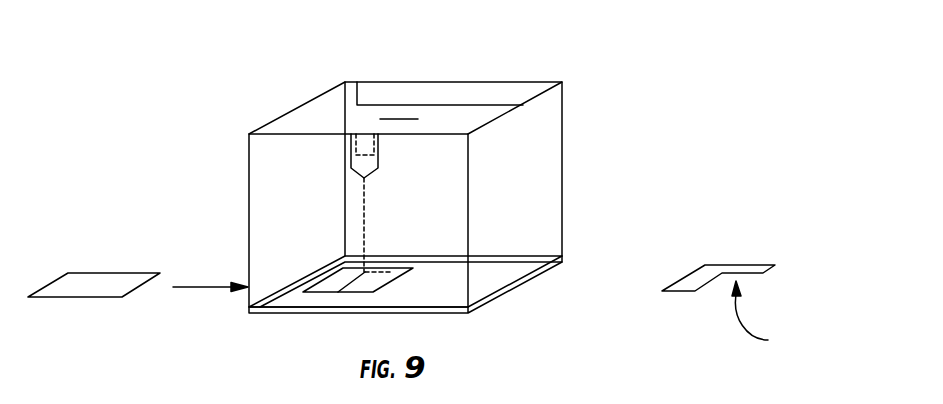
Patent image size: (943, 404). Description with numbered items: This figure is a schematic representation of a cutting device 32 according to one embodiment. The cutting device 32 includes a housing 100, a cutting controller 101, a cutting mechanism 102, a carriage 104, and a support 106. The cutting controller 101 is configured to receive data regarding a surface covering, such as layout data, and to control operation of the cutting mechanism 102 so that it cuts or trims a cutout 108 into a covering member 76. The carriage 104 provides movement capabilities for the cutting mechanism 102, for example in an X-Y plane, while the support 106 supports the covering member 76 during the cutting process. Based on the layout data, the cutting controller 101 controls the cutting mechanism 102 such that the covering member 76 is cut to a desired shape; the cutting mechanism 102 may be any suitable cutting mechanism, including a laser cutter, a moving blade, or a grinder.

The cutting device 32 is at (604, 70).
The covering member 76 is at (83, 283).
The housing 100 is at (563, 167).
The cutting controller 101 is at (357, 147).
The cutting mechanism 102 is at (373, 158).
The carriage 104 is at (357, 83).
The support 106 is at (501, 275).
The cutout 108 is at (768, 317).